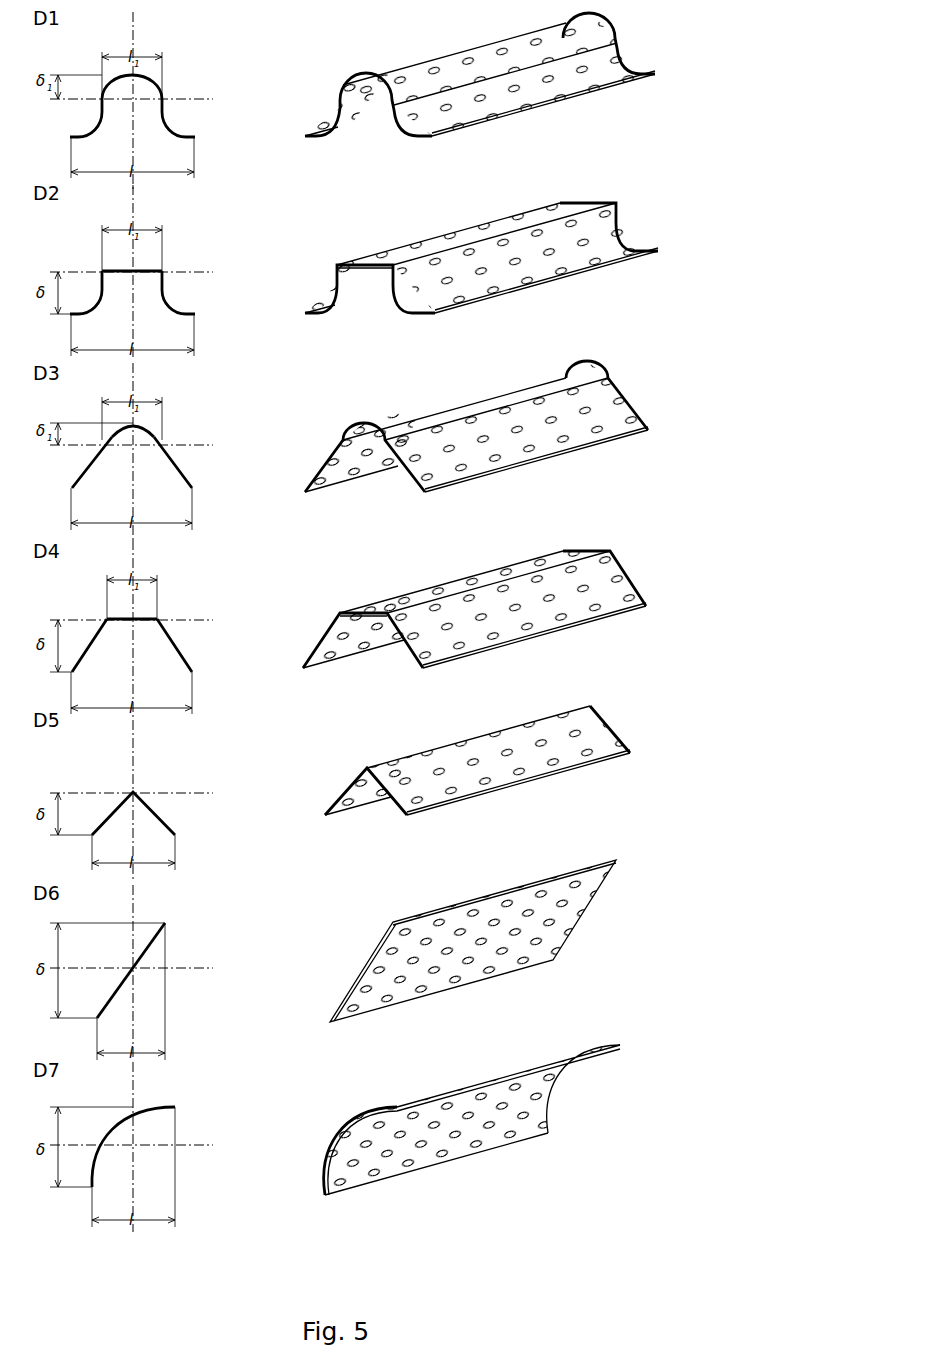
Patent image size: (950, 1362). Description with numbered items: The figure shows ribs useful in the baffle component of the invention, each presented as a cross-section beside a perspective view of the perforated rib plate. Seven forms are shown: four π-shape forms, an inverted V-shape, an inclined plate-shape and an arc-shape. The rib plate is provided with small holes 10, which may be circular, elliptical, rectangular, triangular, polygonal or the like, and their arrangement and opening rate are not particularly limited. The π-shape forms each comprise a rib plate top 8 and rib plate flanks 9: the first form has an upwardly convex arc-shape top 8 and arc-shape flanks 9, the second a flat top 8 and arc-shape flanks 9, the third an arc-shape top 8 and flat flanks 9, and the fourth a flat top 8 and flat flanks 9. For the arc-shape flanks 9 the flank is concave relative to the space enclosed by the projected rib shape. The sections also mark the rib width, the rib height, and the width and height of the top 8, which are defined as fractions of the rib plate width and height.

The rib plate top 8 is at (150, 77).
The rib plate flank 9 is at (170, 118).
The small holes 10 is at (422, 1205).